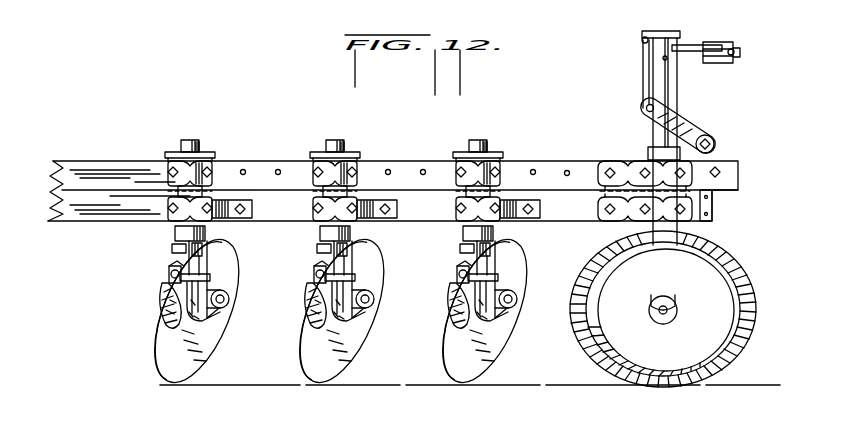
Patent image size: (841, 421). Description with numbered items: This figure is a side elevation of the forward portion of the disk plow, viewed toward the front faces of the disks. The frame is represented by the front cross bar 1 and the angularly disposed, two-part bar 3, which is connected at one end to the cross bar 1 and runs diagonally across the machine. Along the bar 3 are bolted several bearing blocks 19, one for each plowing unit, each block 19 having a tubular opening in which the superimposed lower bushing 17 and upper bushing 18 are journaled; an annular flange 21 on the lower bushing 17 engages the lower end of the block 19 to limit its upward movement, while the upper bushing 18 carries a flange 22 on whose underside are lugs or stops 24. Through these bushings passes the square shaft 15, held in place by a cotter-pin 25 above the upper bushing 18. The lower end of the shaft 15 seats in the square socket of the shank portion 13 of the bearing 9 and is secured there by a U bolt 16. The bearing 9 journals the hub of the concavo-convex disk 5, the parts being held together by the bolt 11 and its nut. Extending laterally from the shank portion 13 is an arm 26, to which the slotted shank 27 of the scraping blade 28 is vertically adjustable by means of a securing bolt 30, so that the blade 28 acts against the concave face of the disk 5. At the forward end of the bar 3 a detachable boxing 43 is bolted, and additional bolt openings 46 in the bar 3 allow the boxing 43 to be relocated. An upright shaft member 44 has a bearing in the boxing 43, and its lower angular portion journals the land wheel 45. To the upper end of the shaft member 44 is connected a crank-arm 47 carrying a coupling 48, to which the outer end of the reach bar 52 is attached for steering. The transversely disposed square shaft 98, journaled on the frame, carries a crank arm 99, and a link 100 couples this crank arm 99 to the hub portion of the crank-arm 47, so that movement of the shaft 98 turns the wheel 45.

The front cross bar 1 is at (714, 198).
The angularly disposed bar 3 is at (100, 172).
The concavo-convex disk 5 is at (232, 347).
The bearing 9 is at (215, 321).
The bolt 11 is at (229, 299).
The shank portion 13 is at (207, 265).
The square shaft 15 is at (193, 140).
The U bolt 16 is at (318, 249).
The lower bushing 17 is at (175, 234).
The upper bushing 18 is at (173, 249).
The bearing block 19 is at (177, 192).
The annular flange 21 is at (206, 224).
The flange 22 is at (218, 158).
The lugs or stops 24 is at (166, 155).
The cotter-pin 25 is at (202, 151).
The arm 26 is at (206, 281).
The shank 27 is at (170, 266).
The scraping blade 28 is at (163, 311).
The securing bolt 30 is at (171, 276).
The boxing 43 is at (607, 163).
The upright shaft member 44 is at (678, 93).
The land wheel 45 is at (757, 266).
The bolt openings 46 is at (569, 168).
The crank-arm 47 is at (680, 47).
The coupling 48 is at (742, 47).
The reach bar 52 is at (716, 42).
The square shaft 98 is at (714, 143).
The crank arm 99 is at (682, 126).
The link 100 is at (643, 78).